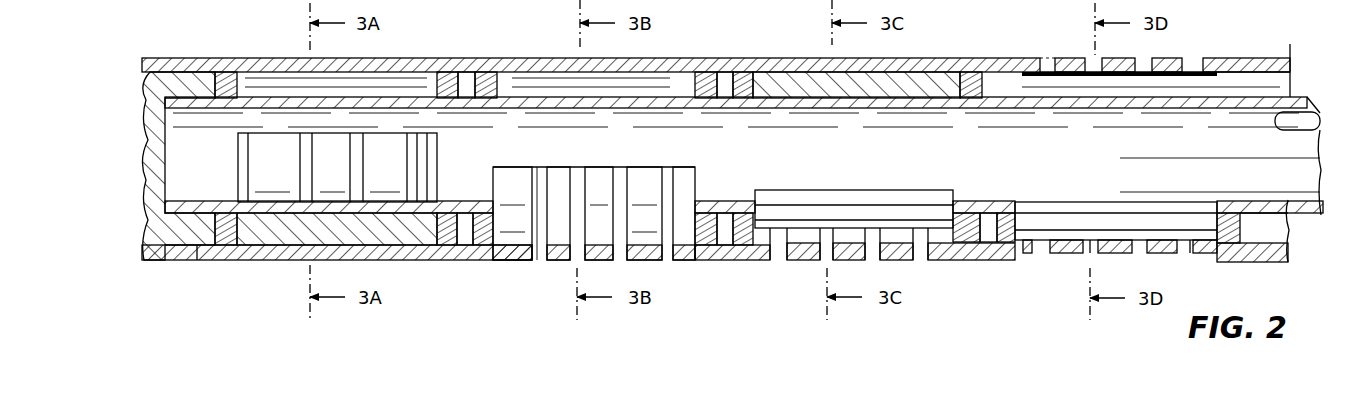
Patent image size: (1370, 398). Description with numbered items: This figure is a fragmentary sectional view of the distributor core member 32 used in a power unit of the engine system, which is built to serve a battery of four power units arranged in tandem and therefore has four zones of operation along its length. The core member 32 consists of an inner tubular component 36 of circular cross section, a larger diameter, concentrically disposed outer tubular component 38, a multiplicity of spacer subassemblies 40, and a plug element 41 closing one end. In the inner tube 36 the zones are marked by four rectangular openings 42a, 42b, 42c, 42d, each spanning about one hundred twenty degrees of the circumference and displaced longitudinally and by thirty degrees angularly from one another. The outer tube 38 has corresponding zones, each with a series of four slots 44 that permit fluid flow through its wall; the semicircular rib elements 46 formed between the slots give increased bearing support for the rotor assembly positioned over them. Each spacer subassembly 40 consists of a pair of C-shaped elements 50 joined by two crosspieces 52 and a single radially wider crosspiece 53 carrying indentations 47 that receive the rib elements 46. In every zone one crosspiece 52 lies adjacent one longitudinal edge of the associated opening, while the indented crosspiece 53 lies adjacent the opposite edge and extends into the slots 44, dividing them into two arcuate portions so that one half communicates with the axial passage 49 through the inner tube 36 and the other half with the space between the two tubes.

The distributor core member 32 is at (186, 57).
The inner tubular component 36 is at (733, 105).
The outer tubular component 38 is at (730, 70).
The spacer subassembly 40 is at (490, 72).
The plug element 41 is at (152, 137).
The rectangular opening 42a is at (437, 135).
The rectangular opening 42b is at (650, 178).
The rectangular opening 42c is at (921, 192).
The rectangular opening 42d is at (1040, 210).
The slot 44 is at (353, 160).
The semicircular rib element 46 is at (284, 144).
The indentation 47 is at (343, 245).
The axial passage 49 is at (1320, 129).
The C-shaped element 50 is at (475, 262).
The crosspiece 52 is at (791, 78).
The crosspiece 53 is at (287, 245).